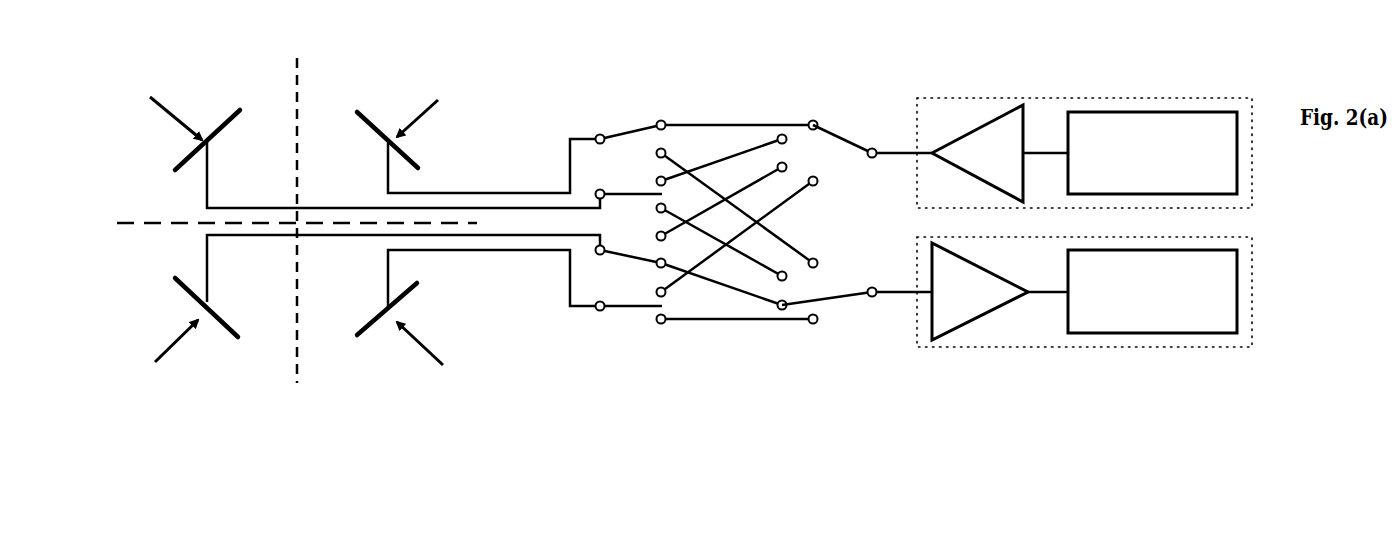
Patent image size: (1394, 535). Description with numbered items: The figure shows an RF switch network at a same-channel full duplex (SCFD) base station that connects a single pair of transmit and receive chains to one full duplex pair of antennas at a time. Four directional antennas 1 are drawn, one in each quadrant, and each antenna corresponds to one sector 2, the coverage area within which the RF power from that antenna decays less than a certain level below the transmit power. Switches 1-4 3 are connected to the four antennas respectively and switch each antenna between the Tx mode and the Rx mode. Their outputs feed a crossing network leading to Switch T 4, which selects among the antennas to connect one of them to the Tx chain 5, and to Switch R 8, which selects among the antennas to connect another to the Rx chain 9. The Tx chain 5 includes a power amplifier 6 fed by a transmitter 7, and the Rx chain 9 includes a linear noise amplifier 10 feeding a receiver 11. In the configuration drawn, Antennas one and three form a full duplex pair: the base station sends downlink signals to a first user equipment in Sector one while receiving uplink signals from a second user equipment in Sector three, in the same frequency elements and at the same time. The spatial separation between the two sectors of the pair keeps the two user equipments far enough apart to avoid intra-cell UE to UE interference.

The directional antennas 1 is at (324, 124).
The sector 2 is at (326, 327).
The switches 1-4 3 is at (686, 268).
The switch T 4 is at (861, 110).
The Tx chain 5 is at (1084, 134).
The power amplifier 6 is at (977, 153).
The transmitter 7 is at (1152, 153).
The switch R 8 is at (857, 341).
The Rx chain 9 is at (1084, 311).
The linear noise amplifier 10 is at (980, 293).
The receiver 11 is at (1152, 291).